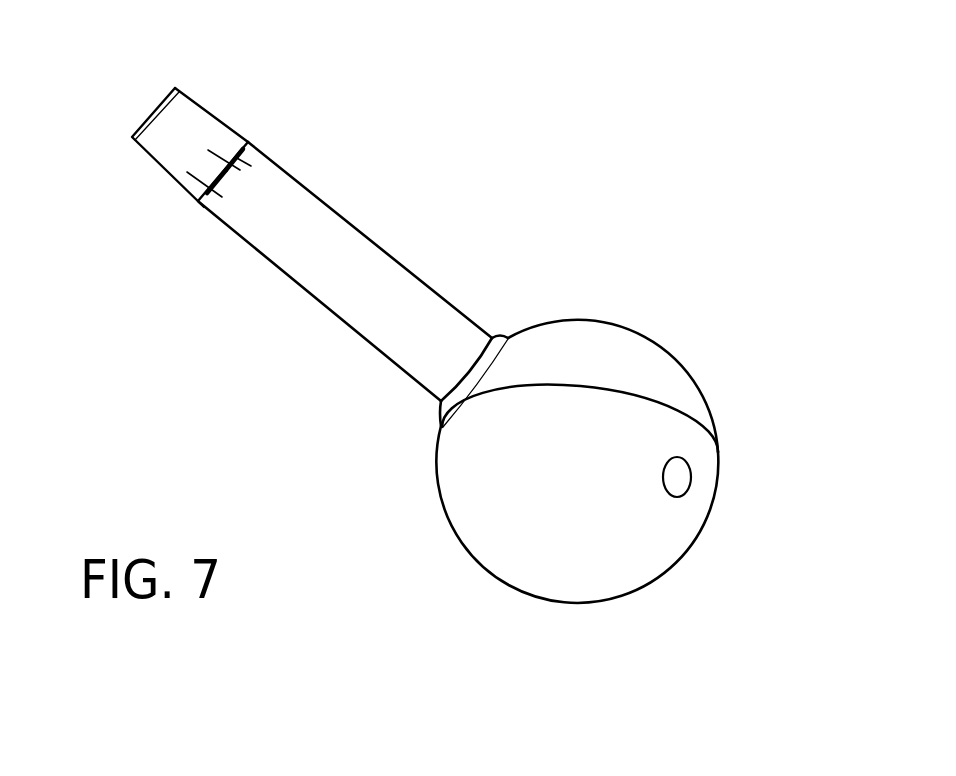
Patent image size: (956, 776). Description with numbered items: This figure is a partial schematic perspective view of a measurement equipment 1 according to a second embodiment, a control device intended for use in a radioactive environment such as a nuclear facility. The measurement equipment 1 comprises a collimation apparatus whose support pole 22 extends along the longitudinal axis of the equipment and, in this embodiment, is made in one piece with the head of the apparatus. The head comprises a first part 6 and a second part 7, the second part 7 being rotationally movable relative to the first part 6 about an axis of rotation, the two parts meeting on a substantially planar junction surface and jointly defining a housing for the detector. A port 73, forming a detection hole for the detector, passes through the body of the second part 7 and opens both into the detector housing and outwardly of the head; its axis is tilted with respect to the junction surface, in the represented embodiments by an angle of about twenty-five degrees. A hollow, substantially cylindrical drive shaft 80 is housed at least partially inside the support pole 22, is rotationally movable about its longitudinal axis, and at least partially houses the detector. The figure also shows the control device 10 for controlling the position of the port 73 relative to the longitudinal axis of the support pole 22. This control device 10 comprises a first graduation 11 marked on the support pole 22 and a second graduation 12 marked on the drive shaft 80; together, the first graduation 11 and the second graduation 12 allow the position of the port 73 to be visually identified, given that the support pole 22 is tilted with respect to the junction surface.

The measurement equipment 1 is at (463, 310).
The first part 6 is at (615, 341).
The second part 7 is at (573, 514).
The port 73 is at (677, 477).
The support pole 22 is at (313, 253).
The control device 10 is at (254, 112).
The first graduation 11 is at (238, 174).
The second graduation 12 is at (221, 160).
The drive shaft 80 is at (183, 118).